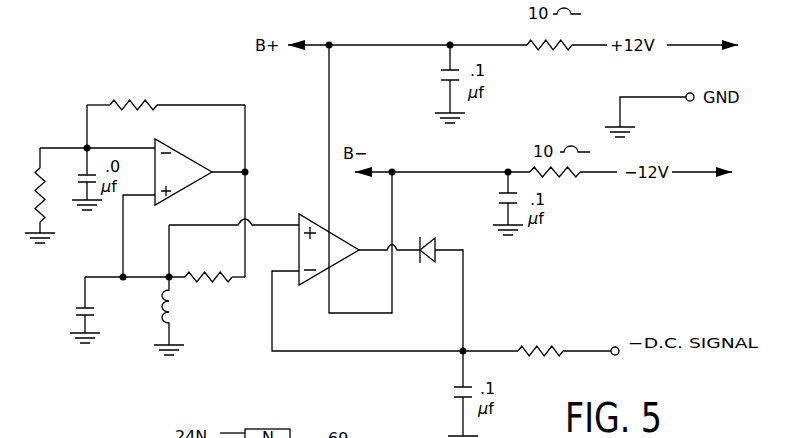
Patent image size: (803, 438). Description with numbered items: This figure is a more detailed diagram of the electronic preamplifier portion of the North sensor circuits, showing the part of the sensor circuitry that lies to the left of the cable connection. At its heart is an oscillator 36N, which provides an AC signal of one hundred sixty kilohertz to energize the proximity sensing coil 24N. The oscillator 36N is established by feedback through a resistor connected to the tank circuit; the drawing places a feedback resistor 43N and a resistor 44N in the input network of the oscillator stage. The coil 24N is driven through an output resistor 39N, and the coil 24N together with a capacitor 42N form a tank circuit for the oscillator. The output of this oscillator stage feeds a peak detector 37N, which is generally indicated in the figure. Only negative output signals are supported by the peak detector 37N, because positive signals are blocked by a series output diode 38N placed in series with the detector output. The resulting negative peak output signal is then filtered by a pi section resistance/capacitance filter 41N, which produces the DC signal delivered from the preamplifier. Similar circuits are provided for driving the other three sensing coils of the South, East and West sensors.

The oscillator 36N is at (175, 143).
The 100K feedback resistor 43N is at (112, 104).
The 1K resistor 44N is at (48, 202).
The capacitor 42N is at (74, 312).
The proximity sensing coil 24N is at (158, 322).
The output resistor 39N is at (207, 282).
The peak detector 37N is at (340, 358).
The series output diode 38N is at (421, 237).
The pi section resistance/capacitance filter 41N is at (507, 331).